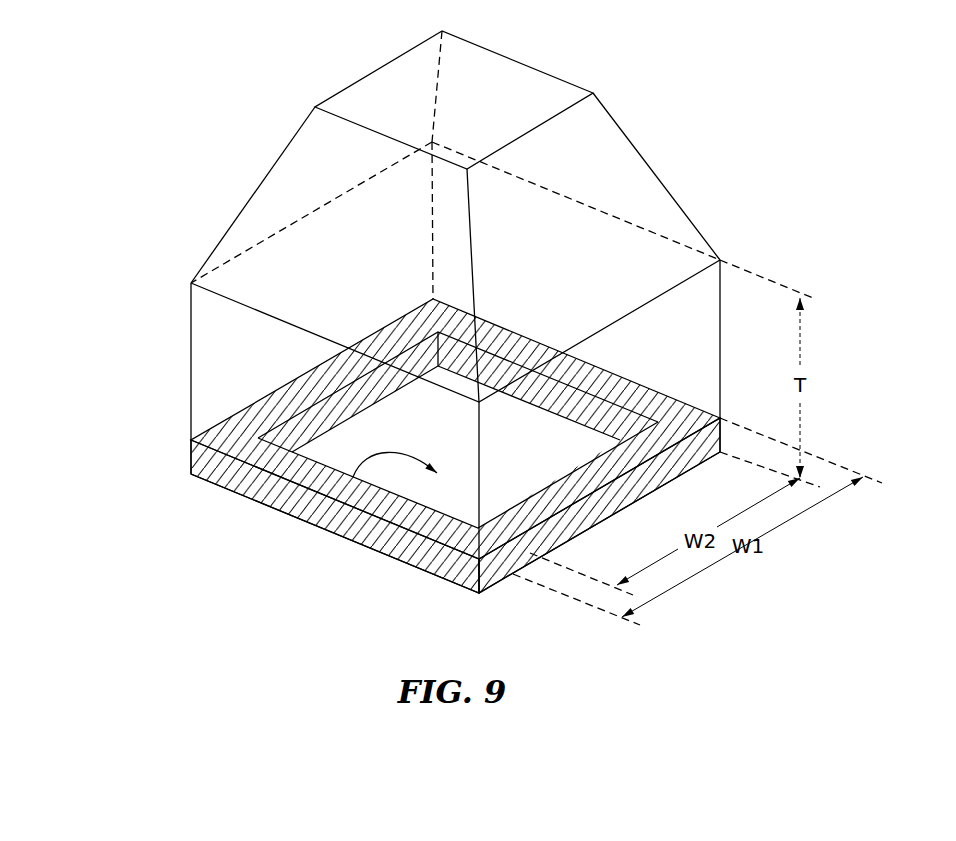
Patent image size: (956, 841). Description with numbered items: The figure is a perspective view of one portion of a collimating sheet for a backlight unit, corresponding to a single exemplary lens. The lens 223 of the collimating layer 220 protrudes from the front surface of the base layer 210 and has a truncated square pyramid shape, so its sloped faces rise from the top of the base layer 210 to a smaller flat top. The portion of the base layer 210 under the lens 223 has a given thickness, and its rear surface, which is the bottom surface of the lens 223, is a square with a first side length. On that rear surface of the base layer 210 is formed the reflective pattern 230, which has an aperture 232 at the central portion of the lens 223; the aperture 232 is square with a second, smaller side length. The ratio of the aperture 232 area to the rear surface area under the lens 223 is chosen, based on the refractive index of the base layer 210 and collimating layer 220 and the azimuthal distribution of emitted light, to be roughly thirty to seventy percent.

The base layer 210 is at (190, 363).
The collimating layer 220 is at (772, 90).
The lens 223 is at (610, 158).
The reflective pattern 230 is at (392, 541).
The aperture 232 is at (340, 492).